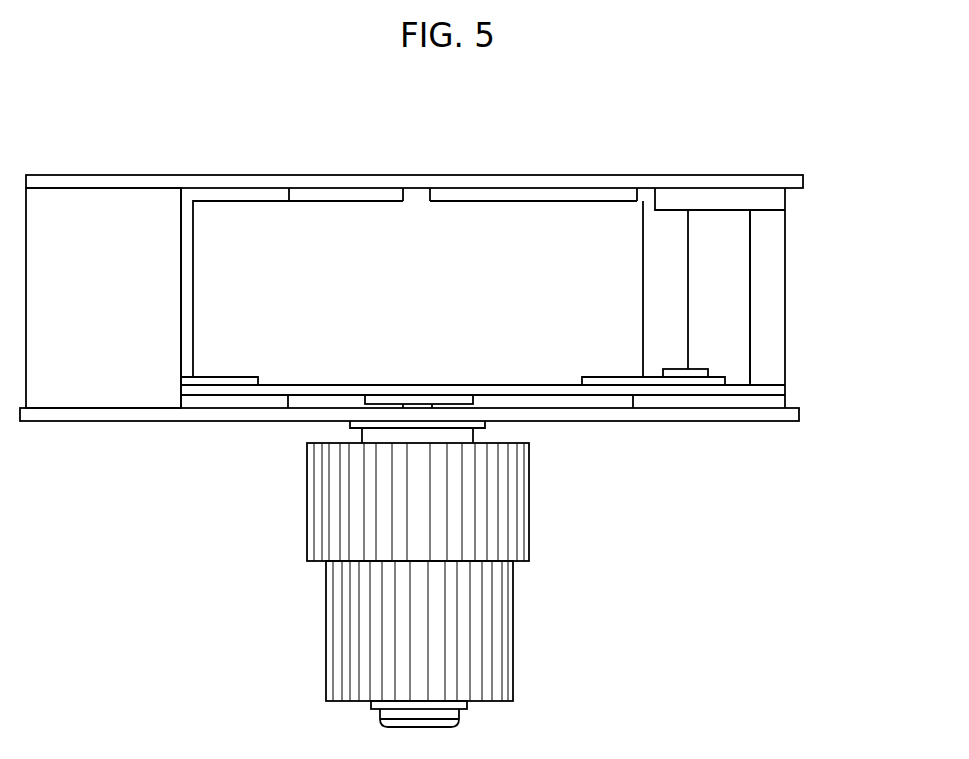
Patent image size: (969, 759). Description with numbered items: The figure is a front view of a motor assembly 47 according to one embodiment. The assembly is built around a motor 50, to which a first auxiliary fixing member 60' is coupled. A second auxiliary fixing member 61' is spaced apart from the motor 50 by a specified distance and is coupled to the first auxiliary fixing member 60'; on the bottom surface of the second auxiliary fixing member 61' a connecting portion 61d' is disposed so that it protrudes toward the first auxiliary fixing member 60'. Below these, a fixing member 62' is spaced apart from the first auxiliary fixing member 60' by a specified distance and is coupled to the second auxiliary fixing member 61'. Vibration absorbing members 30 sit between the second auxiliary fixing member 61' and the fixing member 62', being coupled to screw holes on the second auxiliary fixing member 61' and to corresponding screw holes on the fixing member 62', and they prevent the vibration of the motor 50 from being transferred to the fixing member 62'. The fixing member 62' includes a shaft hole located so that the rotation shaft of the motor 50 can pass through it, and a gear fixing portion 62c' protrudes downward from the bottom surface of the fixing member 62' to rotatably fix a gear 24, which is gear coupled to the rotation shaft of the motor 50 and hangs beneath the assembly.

The vibration absorbing member 30 is at (93, 212).
The motor 50 is at (517, 215).
The second auxiliary fixing member 61' is at (446, 178).
The connecting portion 61d' is at (810, 297).
The first auxiliary fixing member 60' is at (523, 298).
The fixing member 62' is at (443, 402).
The gear fixing portion 62c' is at (482, 439).
The gear 24 is at (488, 628).
The motor assembly 47 is at (121, 591).